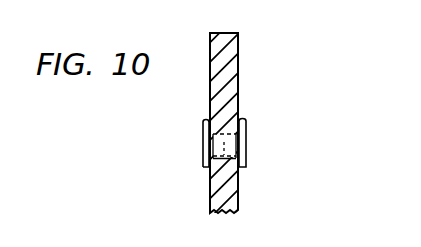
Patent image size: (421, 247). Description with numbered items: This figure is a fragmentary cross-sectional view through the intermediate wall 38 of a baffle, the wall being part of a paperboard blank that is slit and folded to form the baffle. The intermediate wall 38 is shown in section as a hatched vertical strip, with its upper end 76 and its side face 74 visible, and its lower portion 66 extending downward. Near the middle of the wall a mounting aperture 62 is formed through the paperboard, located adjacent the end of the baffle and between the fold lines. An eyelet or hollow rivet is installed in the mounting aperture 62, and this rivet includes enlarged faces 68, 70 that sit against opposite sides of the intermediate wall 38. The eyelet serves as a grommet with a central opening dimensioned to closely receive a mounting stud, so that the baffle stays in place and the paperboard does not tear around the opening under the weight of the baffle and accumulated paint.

The intermediate wall 38 is at (240, 63).
The upper end of bar 76 is at (239, 34).
The side face of bar 74 is at (210, 53).
The grommet 66 is at (210, 182).
The mounting aperture 62 is at (240, 108).
The enlarged face 68 is at (203, 127).
The enlarged face 70 is at (246, 128).